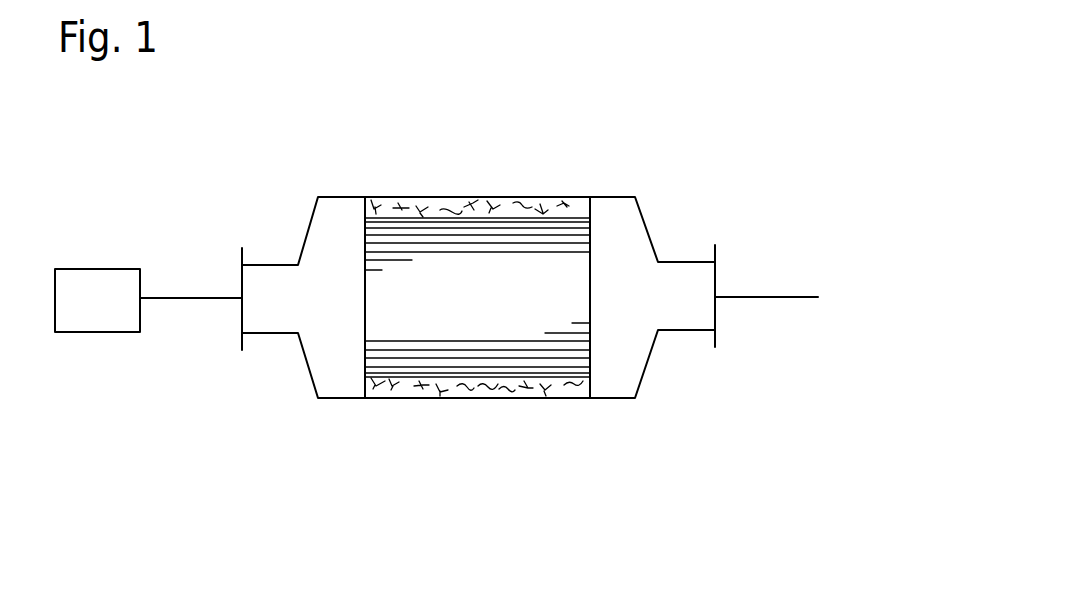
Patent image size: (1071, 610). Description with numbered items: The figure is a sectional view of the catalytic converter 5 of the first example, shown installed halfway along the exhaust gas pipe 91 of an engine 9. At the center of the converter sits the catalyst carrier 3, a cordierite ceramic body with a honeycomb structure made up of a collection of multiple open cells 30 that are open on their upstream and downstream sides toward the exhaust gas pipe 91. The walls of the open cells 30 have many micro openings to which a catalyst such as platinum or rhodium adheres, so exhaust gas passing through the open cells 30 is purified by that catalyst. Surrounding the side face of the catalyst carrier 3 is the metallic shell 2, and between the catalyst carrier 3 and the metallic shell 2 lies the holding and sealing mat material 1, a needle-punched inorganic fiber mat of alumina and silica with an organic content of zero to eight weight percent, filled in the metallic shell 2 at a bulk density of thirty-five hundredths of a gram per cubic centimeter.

The holding and sealing mat material 1 is at (531, 206).
The metallic shell 2 is at (538, 398).
The catalyst carrier 3 is at (461, 287).
The open cells 30 is at (440, 345).
The catalytic converter 5 is at (516, 304).
The engine 9 is at (90, 332).
The exhaust gas pipe 91 is at (183, 297).